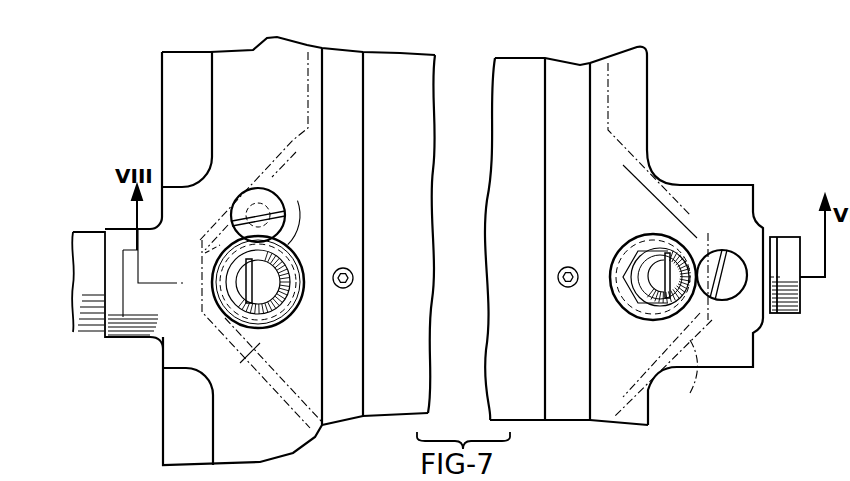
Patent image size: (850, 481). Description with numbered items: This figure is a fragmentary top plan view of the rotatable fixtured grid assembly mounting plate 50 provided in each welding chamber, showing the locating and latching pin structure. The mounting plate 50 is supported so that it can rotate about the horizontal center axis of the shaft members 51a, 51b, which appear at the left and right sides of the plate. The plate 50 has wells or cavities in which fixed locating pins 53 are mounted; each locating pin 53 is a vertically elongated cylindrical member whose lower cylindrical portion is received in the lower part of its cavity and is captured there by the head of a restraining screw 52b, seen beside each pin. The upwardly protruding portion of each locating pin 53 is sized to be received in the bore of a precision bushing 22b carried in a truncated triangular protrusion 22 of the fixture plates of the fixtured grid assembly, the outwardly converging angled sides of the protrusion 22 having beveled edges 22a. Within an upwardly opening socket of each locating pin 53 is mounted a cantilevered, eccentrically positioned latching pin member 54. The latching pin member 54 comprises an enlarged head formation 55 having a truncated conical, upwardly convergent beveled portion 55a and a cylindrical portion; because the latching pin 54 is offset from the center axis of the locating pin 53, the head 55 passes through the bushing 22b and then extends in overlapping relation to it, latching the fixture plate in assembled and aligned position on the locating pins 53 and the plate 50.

The rotatable fixtured grid assembly mounting plate 50 is at (642, 123).
The shaft member 51a is at (92, 337).
The shaft member 51b is at (785, 240).
The restraining screw 52b is at (233, 203).
The truncated triangular protrusion 22 is at (213, 387).
The beveled edge 22a is at (260, 408).
The precision bushing 22b is at (255, 196).
The locating pin 53 is at (275, 306).
The latching pin member 54 is at (292, 268).
The enlarged head formation 55 is at (272, 292).
The truncated conical beveled portion 55a is at (240, 282).